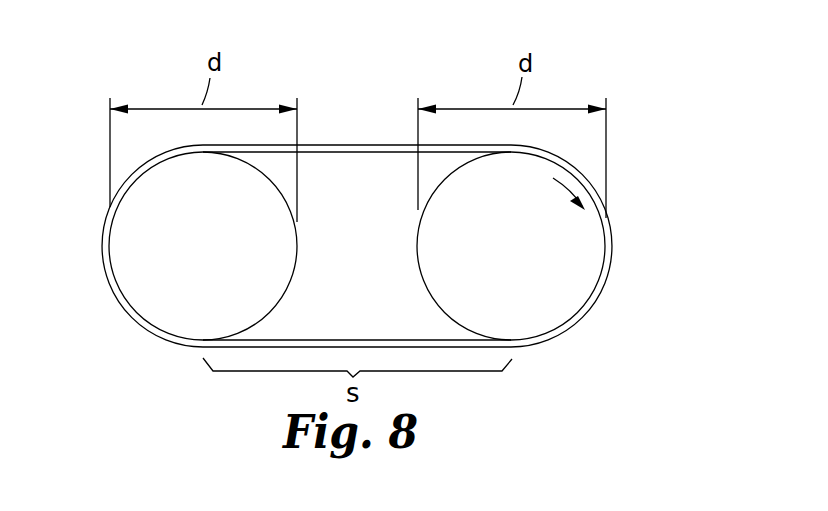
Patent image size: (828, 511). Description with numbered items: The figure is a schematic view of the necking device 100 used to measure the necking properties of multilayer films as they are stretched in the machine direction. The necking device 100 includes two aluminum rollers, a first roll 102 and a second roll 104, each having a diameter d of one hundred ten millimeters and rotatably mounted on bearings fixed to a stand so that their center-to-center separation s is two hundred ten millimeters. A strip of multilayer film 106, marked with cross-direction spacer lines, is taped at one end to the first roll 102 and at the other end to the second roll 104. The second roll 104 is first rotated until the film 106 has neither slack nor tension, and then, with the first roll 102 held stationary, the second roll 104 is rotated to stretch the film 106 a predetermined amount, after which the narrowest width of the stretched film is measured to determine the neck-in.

The necking device 100 is at (606, 52).
The first roll 102 is at (132, 274).
The second roll 104 is at (583, 279).
The multilayer film 106 is at (358, 148).